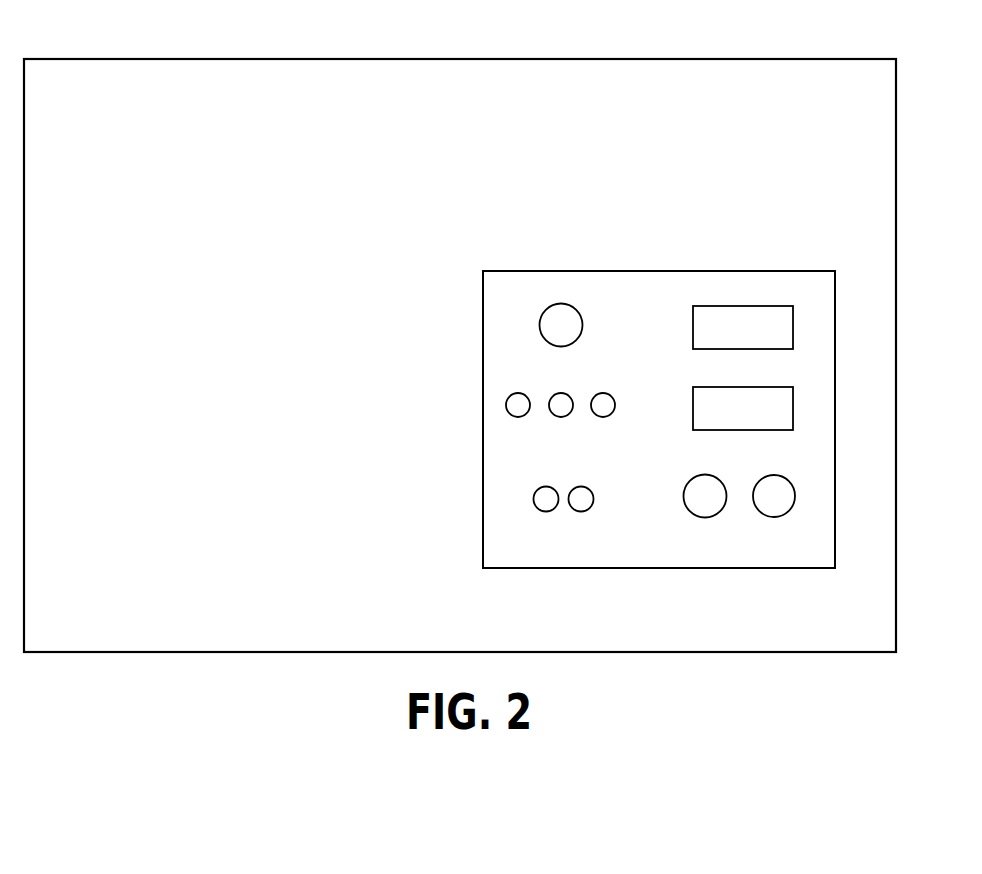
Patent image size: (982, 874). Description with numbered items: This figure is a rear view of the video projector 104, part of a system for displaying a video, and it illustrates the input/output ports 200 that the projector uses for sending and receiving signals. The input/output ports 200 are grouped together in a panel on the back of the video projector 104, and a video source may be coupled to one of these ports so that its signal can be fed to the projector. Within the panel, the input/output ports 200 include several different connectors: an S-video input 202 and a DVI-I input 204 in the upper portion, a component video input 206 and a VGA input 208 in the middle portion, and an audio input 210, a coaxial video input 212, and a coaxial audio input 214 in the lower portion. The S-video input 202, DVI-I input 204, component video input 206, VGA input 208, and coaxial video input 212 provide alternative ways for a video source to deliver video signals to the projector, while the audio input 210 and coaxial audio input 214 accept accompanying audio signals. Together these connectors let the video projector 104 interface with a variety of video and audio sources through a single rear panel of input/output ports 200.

The video projector 104 is at (441, 33).
The input/output ports 200 is at (668, 271).
The S-video input 202 is at (571, 306).
The DVI-I input 204 is at (714, 306).
The component video input 206 is at (523, 393).
The VGA input 208 is at (742, 387).
The audio input 210 is at (547, 486).
The coaxial video input 212 is at (713, 475).
The coaxial audio input 214 is at (781, 476).